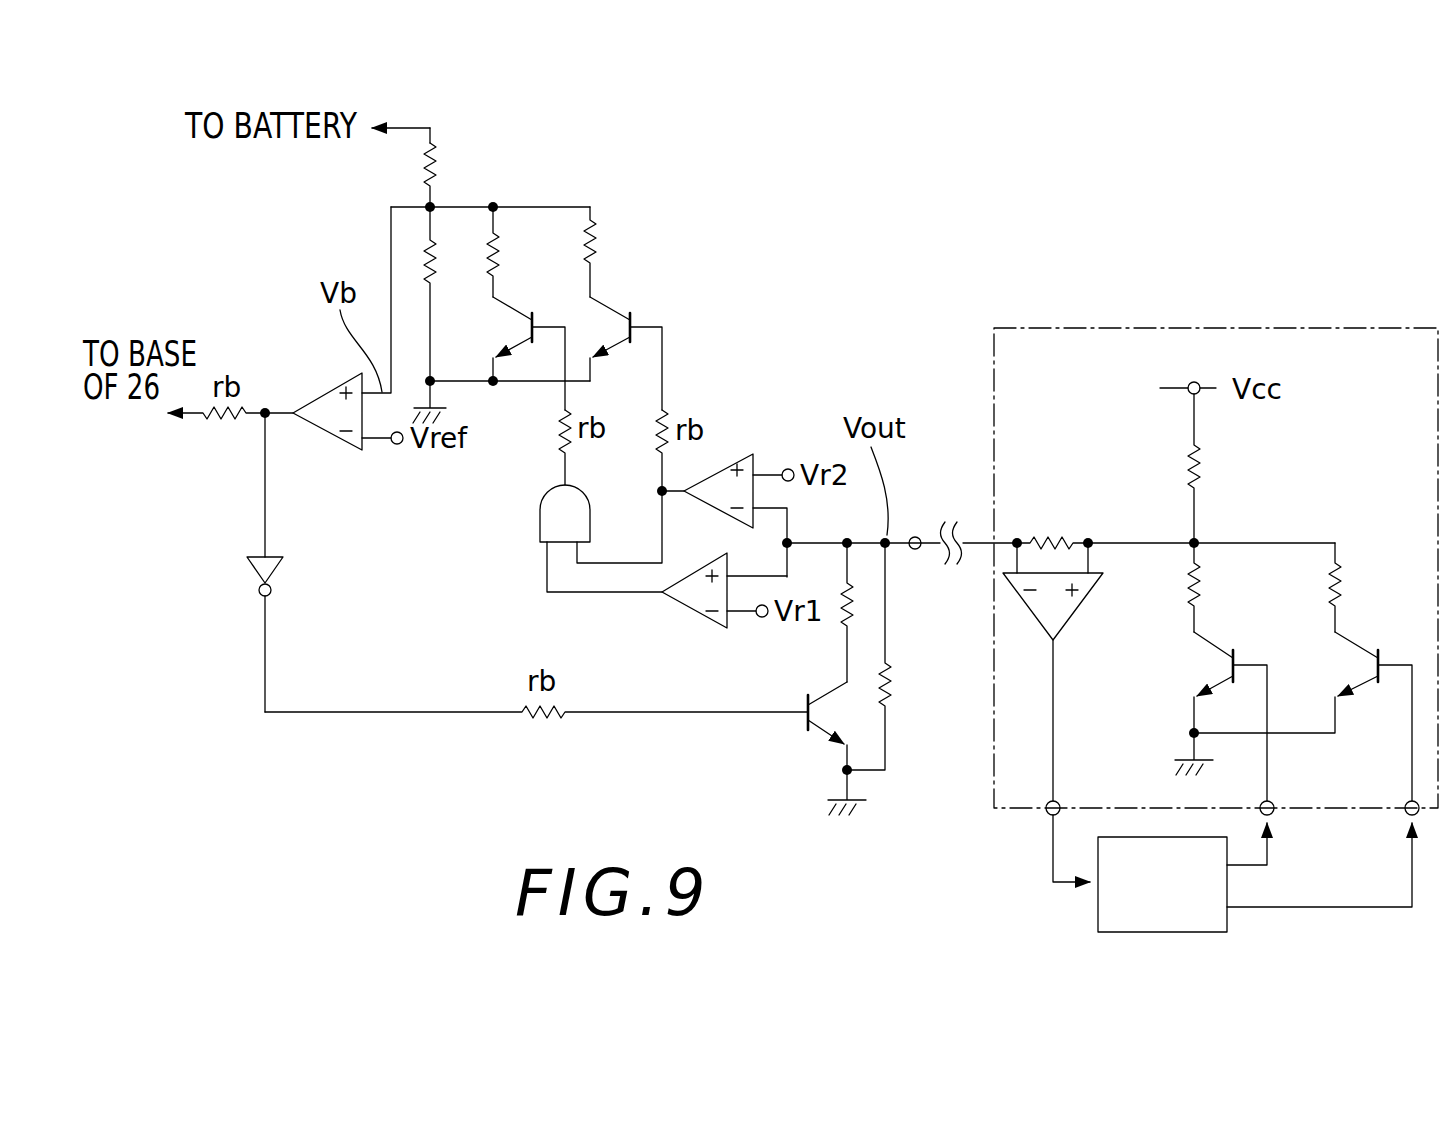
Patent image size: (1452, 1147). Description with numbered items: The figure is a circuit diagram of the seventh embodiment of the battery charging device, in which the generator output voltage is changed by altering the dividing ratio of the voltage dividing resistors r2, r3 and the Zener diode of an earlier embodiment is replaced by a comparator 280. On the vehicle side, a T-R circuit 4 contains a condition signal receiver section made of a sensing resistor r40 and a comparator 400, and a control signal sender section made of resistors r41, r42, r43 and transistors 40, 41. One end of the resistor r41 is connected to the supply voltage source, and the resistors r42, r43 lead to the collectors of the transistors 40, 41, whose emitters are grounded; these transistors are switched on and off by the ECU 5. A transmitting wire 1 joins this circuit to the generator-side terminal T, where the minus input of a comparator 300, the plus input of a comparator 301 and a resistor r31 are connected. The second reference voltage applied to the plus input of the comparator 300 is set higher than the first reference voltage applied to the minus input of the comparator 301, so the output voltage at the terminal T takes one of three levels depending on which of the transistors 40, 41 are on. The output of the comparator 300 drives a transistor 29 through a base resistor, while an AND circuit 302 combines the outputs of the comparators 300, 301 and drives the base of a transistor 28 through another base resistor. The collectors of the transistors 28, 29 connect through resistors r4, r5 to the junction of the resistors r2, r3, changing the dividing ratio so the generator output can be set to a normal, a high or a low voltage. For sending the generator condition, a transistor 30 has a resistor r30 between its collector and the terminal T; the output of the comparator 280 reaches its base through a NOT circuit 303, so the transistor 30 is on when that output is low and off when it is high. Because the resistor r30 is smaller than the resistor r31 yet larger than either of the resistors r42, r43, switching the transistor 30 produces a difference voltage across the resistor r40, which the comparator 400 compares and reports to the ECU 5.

The voltage dividing resistor r2 is at (427, 171).
The voltage dividing resistor r3 is at (427, 259).
The resistor r4 is at (496, 250).
The resistor r5 is at (598, 252).
The transistor 28 is at (540, 320).
The transistor 29 is at (646, 324).
The comparator 280 is at (333, 423).
The comparator 300 is at (725, 470).
The comparator 301 is at (690, 597).
The AND circuit 302 is at (546, 518).
The NOT circuit 303 is at (276, 572).
The transistor 30 is at (812, 733).
The resistor r30 is at (858, 613).
The resistor r31 is at (897, 690).
The generator-side terminal T is at (915, 524).
The transmitting wire 1 is at (975, 538).
The vehicle side T-R circuit 4 is at (1160, 327).
The comparator 400 is at (1070, 618).
The resistor r40 is at (1058, 536).
The resistor r41 is at (1205, 476).
The resistor r42 is at (1205, 596).
The resistor r43 is at (1345, 576).
The transistor 40 is at (1218, 651).
The transistor 41 is at (1360, 645).
The ECU 5 is at (1105, 907).